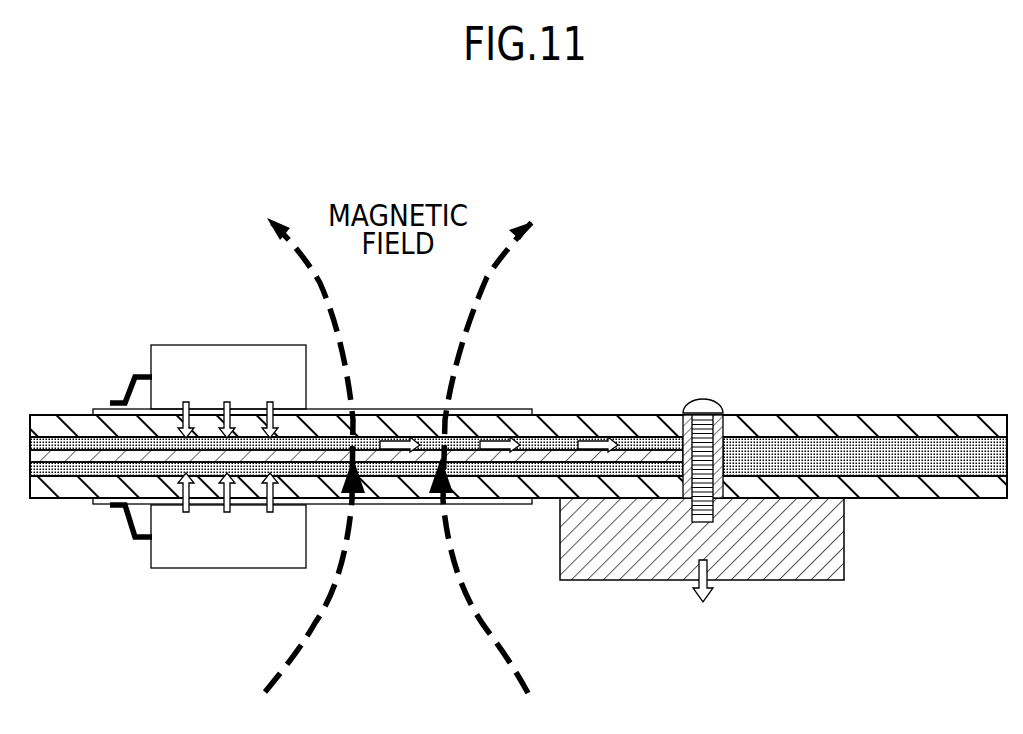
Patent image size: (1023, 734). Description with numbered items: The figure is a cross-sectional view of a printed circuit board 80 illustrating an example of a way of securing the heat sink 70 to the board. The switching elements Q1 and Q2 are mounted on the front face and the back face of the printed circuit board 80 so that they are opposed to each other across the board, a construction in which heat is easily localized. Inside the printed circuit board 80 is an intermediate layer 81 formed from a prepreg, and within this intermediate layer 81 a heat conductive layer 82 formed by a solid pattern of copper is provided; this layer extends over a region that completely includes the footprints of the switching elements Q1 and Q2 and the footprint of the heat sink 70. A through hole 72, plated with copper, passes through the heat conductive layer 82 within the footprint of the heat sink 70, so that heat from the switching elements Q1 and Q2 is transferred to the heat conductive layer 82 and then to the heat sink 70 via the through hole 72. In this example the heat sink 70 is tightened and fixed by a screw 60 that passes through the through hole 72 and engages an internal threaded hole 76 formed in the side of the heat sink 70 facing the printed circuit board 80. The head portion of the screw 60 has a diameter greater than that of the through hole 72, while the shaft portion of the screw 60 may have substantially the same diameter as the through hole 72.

The screw 60 is at (710, 397).
The heat sink 70 is at (812, 595).
The through hole 72 is at (741, 444).
The fixing hole 76 is at (722, 503).
The printed circuit board 80 is at (607, 405).
The intermediate layer 81 is at (667, 434).
The heat conductive layer 82 is at (541, 415).
The switching element Q1 is at (236, 345).
The switching element Q2 is at (236, 568).